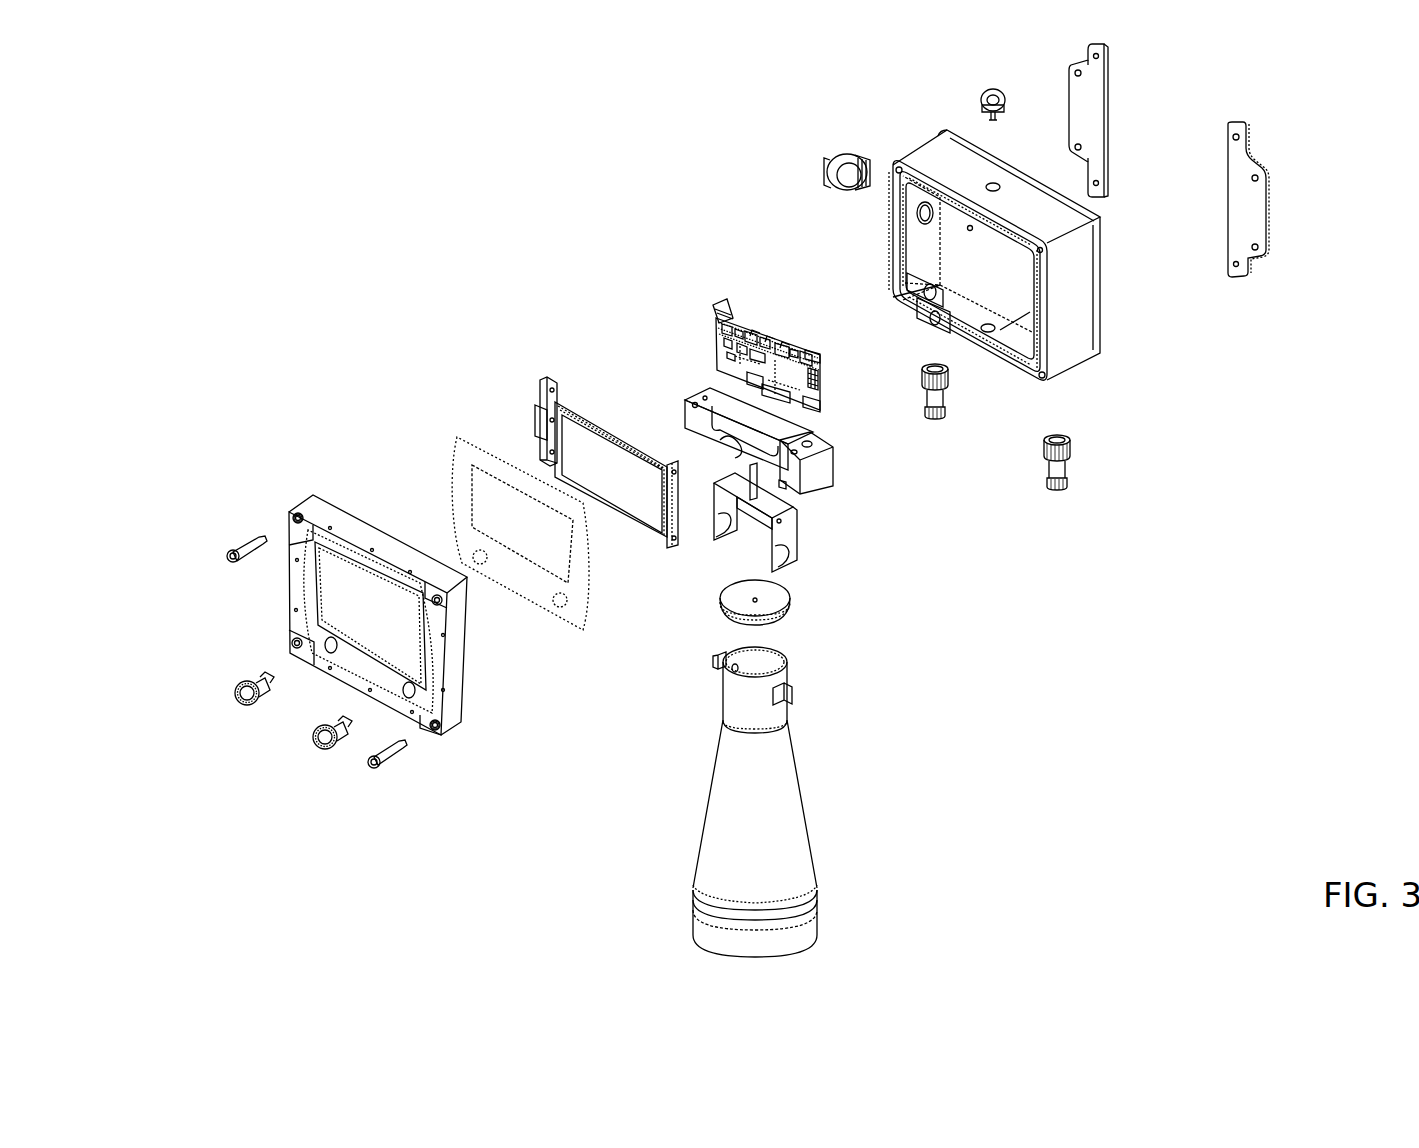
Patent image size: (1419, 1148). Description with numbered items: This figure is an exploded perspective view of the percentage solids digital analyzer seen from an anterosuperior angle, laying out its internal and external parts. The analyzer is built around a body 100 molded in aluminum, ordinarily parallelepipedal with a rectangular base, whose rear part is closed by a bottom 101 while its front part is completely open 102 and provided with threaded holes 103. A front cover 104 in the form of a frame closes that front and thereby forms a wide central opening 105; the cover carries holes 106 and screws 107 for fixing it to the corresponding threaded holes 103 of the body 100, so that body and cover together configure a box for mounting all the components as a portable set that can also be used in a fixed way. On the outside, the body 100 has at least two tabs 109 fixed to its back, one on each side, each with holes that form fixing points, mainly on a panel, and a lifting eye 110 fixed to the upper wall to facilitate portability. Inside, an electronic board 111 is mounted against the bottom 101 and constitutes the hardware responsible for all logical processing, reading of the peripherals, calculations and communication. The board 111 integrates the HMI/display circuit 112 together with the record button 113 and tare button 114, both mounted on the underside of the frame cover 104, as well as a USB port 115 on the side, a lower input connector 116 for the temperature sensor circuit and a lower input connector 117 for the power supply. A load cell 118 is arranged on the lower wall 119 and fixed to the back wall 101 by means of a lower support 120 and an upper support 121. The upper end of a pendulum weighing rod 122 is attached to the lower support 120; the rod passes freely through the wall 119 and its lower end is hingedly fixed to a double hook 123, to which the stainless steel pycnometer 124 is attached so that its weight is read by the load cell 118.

The body 100 is at (1100, 287).
The bottom 101 is at (1028, 315).
The open front part 102 is at (913, 254).
The threaded holes 103 is at (899, 168).
The front cover 104 is at (350, 523).
The central opening 105 is at (348, 597).
The holes 106 is at (296, 516).
The screws 107 is at (226, 557).
The tabs 109 is at (1090, 110).
The lifting eye 110 is at (985, 98).
The electronic board 111 is at (722, 320).
The HMI/display circuit 112 is at (573, 450).
The record button 113 is at (313, 745).
The tare button 114 is at (238, 695).
The USB port 115 is at (826, 160).
The lower input connector 116 is at (938, 419).
The lower input connector 117 is at (1060, 475).
The load cell 118 is at (743, 417).
The lower wall 119 is at (943, 312).
The lower support 120 is at (695, 442).
The upper support 121 is at (812, 447).
The pendulum weighing rod 122 is at (760, 485).
The double hook 123 is at (787, 532).
The pycnometer 124 is at (806, 786).